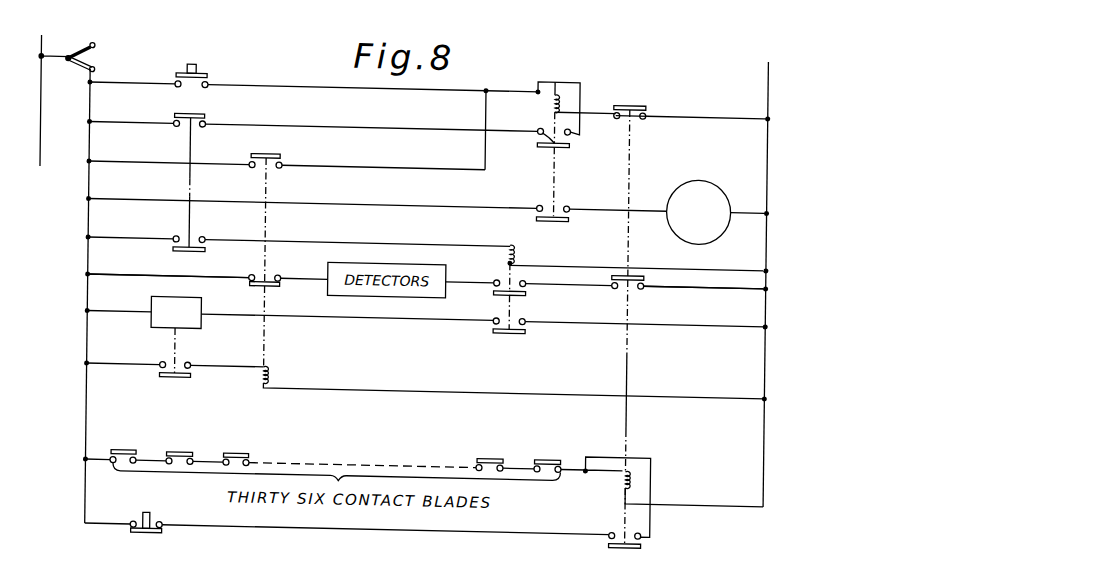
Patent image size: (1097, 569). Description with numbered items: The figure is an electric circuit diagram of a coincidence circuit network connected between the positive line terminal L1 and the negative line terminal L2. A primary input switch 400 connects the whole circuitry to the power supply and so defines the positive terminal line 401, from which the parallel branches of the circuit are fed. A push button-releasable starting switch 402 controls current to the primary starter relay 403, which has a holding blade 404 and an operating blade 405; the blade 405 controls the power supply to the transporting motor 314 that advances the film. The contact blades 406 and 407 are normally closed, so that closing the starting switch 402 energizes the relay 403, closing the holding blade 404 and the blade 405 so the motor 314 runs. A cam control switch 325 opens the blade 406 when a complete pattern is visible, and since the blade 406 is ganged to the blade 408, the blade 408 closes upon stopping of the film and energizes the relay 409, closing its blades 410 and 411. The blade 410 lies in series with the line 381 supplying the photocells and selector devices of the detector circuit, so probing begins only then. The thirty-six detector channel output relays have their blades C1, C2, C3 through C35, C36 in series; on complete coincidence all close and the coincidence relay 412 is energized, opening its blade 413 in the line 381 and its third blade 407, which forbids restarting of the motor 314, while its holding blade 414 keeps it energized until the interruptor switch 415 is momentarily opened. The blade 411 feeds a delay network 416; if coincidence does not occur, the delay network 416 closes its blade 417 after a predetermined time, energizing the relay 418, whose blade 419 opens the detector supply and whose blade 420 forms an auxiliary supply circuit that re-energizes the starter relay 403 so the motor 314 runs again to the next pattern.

The transporting motor 314 is at (695, 172).
The cam control switch 325 is at (150, 172).
The line 381 is at (119, 276).
The primary input switch 400 is at (97, 47).
The positive terminal line 401 is at (96, 69).
The starting switch 402 is at (198, 62).
The primary starter relay 403 is at (559, 87).
The holding blade 404 is at (551, 125).
The operating blade 405 is at (558, 196).
The contact blade 406 is at (190, 111).
The contact blade 407 is at (638, 94).
The blade 408 is at (198, 244).
The relay 409 is at (516, 248).
The blade 410 is at (498, 271).
The blade 411 is at (513, 324).
The coincidence relay 412 is at (628, 458).
The blade 413 is at (627, 264).
The holding blade 414 is at (634, 536).
The interruptor switch 415 is at (156, 511).
The delay network 416 is at (204, 320).
The blade 417 is at (191, 362).
The relay 418 is at (271, 372).
The blade 419 is at (273, 277).
The blade 420 is at (272, 150).
The relay blade C1 is at (120, 449).
The relay blade C2 is at (178, 450).
The relay blade C3 is at (232, 450).
The relay blade C35 is at (486, 450).
The relay blade C36 is at (546, 450).
The positive line terminal L1 is at (50, 91).
The negative line terminal L2 is at (766, 273).